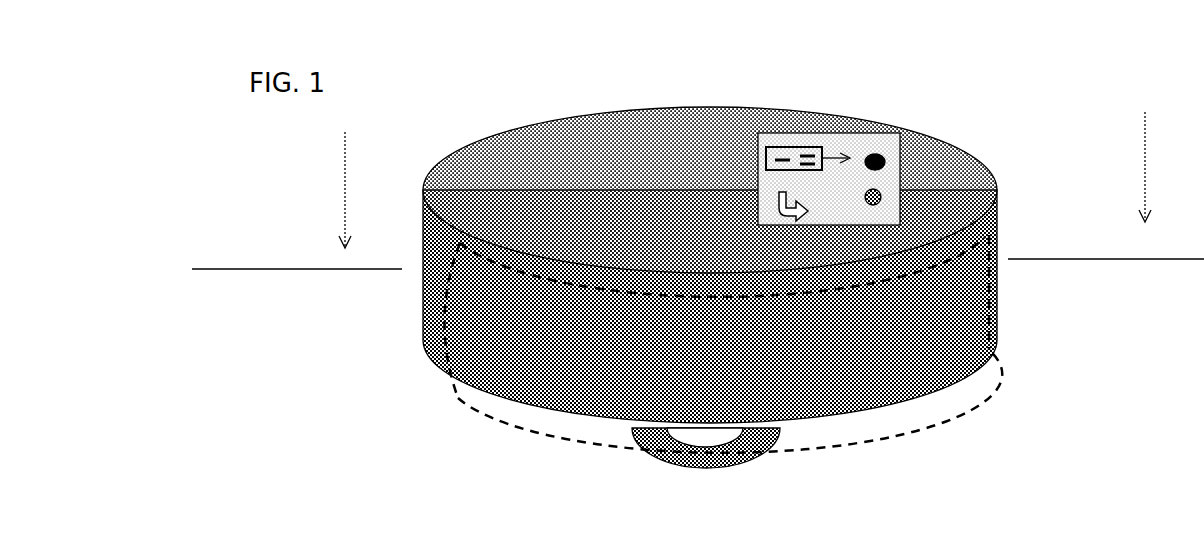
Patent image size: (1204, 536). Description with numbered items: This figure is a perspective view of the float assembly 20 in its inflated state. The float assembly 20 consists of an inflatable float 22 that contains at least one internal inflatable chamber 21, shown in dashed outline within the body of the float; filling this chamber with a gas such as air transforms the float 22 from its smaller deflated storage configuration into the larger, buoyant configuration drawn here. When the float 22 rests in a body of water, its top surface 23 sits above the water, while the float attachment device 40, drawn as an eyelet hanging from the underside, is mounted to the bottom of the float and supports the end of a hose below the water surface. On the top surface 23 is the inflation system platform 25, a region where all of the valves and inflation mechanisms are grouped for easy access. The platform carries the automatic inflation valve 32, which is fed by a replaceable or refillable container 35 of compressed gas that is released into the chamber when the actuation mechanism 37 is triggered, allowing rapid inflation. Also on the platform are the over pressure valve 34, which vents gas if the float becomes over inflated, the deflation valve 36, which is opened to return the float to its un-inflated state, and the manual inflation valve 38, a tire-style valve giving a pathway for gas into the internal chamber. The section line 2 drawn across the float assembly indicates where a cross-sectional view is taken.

The section line 2- 2 is at (698, 190).
The float assembly 20 is at (601, 263).
The internal inflatable chamber 21 is at (460, 400).
The inflatable float 22 is at (455, 327).
The top surface 23 is at (533, 180).
The inflation system platform 25 is at (903, 177).
The automatic inflation valve 32 is at (793, 147).
The over pressure valve 34 is at (878, 152).
The container 35 is at (757, 138).
The deflation valve 36 is at (880, 199).
The actuation mechanism 37 is at (753, 157).
The manual inflation valve 38 is at (803, 208).
The float attachment device 40 is at (638, 450).